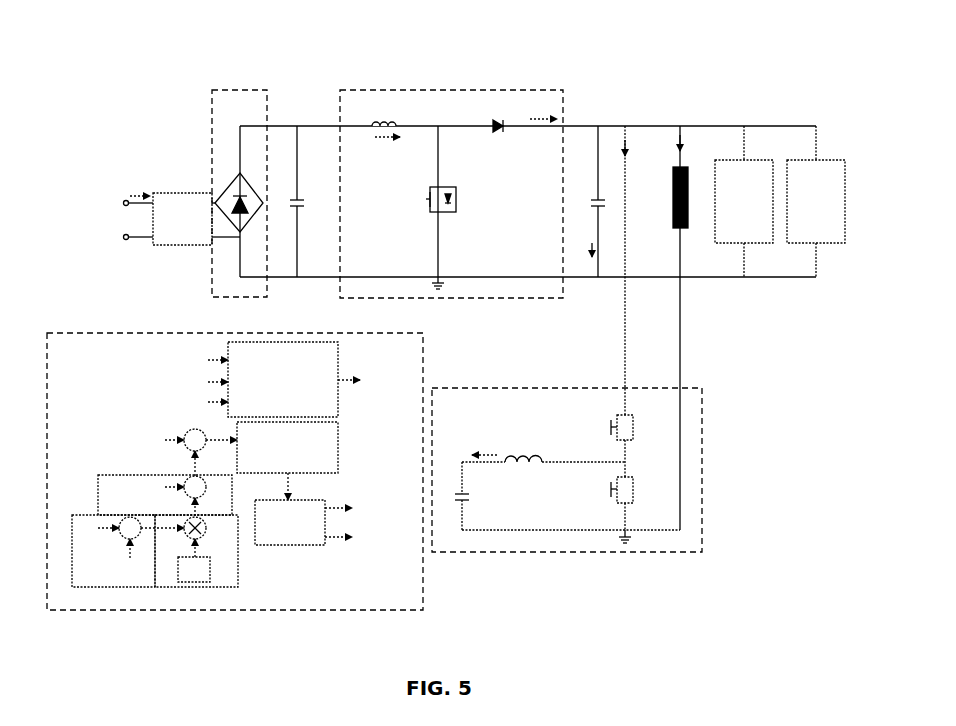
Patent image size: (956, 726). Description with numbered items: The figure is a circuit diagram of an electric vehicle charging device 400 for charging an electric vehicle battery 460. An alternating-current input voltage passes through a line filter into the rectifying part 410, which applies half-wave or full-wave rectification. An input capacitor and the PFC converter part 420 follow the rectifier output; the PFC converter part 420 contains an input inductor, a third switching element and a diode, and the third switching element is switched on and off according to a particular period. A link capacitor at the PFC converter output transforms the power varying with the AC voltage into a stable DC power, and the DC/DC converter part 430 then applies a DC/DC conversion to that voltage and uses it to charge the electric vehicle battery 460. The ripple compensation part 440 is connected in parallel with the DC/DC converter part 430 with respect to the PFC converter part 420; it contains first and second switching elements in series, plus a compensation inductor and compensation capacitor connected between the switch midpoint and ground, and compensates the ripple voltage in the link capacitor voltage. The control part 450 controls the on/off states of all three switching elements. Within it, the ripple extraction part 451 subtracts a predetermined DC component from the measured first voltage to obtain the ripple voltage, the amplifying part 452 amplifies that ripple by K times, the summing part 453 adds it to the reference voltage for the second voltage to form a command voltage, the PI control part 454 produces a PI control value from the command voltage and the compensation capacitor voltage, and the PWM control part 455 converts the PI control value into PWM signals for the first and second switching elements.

The electric vehicle charging device 400 is at (563, 30).
The rectifying part 410 is at (252, 90).
The PFC converter part 420 is at (448, 90).
The DC/DC converter part 430 is at (760, 160).
The ripple compensation part 440 is at (703, 466).
The control part 450 is at (423, 347).
The ripple extraction part 451 is at (90, 588).
The amplifying part 452 is at (165, 588).
The summing part 453 is at (112, 475).
The PI control part 454 is at (338, 441).
The PWM control part 455 is at (270, 547).
The electric vehicle battery 460 is at (826, 160).